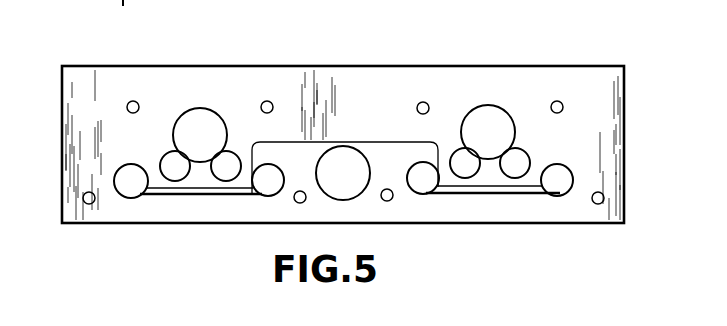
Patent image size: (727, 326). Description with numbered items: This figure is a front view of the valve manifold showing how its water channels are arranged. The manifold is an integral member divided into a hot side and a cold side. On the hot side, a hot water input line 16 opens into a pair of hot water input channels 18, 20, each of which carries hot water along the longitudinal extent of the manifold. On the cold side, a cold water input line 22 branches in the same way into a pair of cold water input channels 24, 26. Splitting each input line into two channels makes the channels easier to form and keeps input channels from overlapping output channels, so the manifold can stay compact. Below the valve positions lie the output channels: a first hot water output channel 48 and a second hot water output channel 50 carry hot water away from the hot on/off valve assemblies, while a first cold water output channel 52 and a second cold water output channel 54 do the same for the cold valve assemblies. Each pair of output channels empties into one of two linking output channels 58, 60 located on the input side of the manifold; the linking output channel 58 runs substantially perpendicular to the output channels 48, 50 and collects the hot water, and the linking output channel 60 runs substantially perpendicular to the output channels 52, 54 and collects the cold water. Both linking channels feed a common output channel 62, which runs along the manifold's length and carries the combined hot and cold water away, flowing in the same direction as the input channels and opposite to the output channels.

The hot water input line 16 is at (192, 112).
The hot water input channel 18 is at (168, 156).
The hot water input channel 20 is at (233, 153).
The cold water input line 22 is at (492, 108).
The cold water input channel 24 is at (525, 150).
The cold water input channel 26 is at (465, 150).
The first hot water output channel 48 is at (117, 176).
The second hot water output channel 50 is at (273, 194).
The first cold water output channel 52 is at (561, 172).
The second cold water output channel 54 is at (426, 184).
The linking output channel 58 is at (192, 190).
The linking output channel 60 is at (503, 192).
The common output channel 62 is at (342, 147).